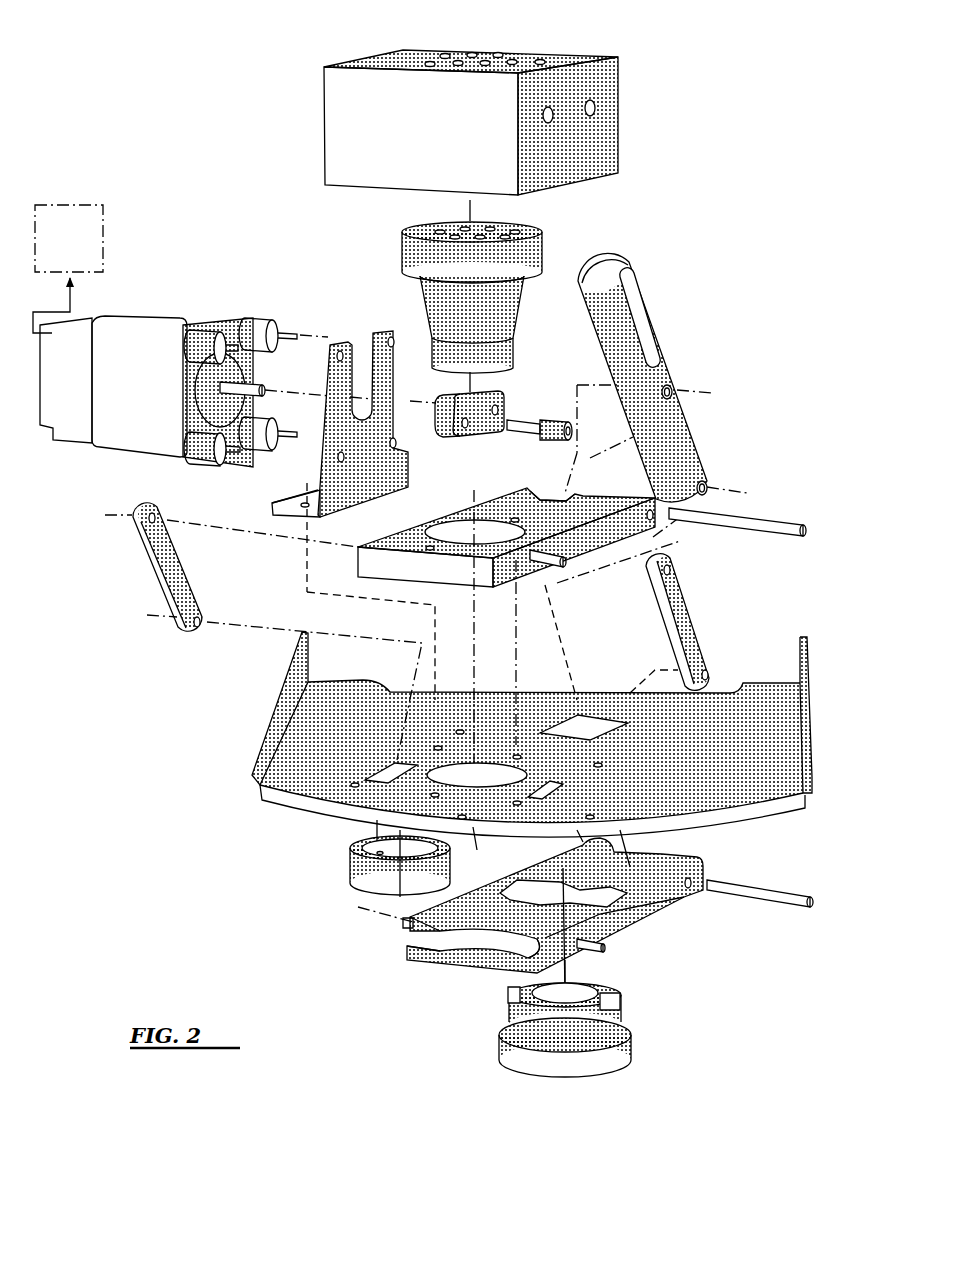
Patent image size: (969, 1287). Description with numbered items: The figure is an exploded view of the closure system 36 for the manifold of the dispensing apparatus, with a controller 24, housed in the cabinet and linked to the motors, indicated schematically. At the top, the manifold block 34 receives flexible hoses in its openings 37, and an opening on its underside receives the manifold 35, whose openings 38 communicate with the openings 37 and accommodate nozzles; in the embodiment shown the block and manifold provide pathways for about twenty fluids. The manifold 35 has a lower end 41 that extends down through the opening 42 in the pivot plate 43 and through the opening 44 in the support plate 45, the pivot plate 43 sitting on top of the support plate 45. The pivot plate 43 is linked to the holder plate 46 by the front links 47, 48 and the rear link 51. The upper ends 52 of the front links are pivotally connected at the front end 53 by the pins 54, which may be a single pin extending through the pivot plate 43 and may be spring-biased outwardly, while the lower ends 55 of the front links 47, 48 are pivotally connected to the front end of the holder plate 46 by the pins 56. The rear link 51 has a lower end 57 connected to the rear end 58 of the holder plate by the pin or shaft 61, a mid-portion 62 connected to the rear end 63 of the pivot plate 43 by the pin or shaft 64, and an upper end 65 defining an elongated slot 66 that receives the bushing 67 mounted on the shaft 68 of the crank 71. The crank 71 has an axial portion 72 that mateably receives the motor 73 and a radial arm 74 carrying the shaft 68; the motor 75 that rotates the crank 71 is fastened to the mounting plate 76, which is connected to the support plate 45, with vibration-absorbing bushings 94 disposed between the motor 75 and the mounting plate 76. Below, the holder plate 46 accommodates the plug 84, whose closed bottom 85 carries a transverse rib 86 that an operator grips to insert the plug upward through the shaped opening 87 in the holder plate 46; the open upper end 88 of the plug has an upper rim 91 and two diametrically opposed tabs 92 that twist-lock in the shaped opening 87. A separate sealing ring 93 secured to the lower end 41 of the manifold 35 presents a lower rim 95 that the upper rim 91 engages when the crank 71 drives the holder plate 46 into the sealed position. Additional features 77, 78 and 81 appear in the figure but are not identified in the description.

The controller 24 is at (68, 269).
The manifold block 34 is at (568, 52).
The manifold 35 is at (548, 243).
The closure system 36 is at (216, 169).
The openings 37 is at (485, 61).
The openings 38 is at (437, 232).
The lower end 41 is at (504, 375).
The opening 42 is at (457, 527).
The pivot plate 43 is at (355, 553).
The opening 44 is at (507, 763).
The support plate 45 is at (276, 813).
The holder plate 46 is at (668, 912).
The front link 47 is at (145, 573).
The front link 48 is at (694, 608).
The rear link 51 is at (694, 421).
The upper ends 52 is at (142, 505).
The front end 53 is at (448, 570).
The pins 54 is at (370, 542).
The lower end 55 is at (193, 632).
The pins 56 is at (403, 922).
The lower end 57 is at (708, 485).
The rear end 58 is at (700, 875).
The pin or shaft 61 is at (763, 897).
The mid-portion 62 is at (673, 388).
The rear end 63 is at (547, 490).
The pin or shaft 64 is at (760, 522).
The upper end 65 is at (647, 300).
The elongated slot 66 is at (657, 330).
The bushing 67 is at (548, 418).
The pin or shaft 68 is at (521, 430).
The crank 71 is at (437, 383).
The axial portion 72 is at (440, 418).
The motor 73 is at (261, 385).
The radial arm 74 is at (481, 432).
The motor 75 is at (103, 313).
The mounting plate 76 is at (341, 340).
The upper prong 77 is at (407, 958).
The lower prong 78 is at (477, 945).
The fork slot 81 is at (493, 930).
The plug 84 is at (537, 1064).
The closed bottom 85 is at (585, 1054).
The transverse rib 86 is at (605, 1068).
The shaped opening 87 is at (563, 868).
The open upper end 88 is at (637, 1012).
The upper rim 91 is at (594, 980).
The tabs 92 is at (622, 1000).
The sealing ring 93 is at (347, 862).
The vibration-absorbing bushings 94 is at (196, 330).
The lower rim 95 is at (350, 888).